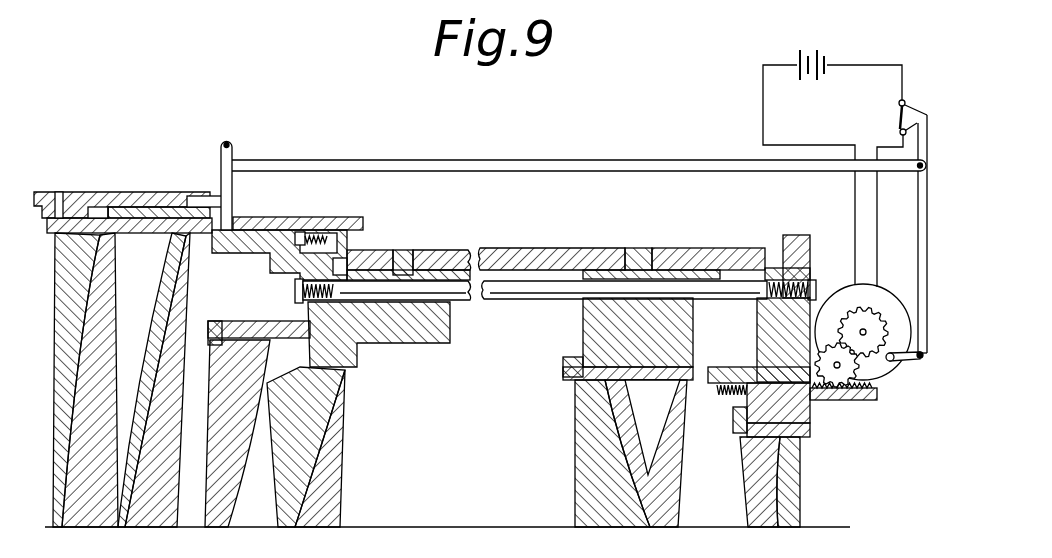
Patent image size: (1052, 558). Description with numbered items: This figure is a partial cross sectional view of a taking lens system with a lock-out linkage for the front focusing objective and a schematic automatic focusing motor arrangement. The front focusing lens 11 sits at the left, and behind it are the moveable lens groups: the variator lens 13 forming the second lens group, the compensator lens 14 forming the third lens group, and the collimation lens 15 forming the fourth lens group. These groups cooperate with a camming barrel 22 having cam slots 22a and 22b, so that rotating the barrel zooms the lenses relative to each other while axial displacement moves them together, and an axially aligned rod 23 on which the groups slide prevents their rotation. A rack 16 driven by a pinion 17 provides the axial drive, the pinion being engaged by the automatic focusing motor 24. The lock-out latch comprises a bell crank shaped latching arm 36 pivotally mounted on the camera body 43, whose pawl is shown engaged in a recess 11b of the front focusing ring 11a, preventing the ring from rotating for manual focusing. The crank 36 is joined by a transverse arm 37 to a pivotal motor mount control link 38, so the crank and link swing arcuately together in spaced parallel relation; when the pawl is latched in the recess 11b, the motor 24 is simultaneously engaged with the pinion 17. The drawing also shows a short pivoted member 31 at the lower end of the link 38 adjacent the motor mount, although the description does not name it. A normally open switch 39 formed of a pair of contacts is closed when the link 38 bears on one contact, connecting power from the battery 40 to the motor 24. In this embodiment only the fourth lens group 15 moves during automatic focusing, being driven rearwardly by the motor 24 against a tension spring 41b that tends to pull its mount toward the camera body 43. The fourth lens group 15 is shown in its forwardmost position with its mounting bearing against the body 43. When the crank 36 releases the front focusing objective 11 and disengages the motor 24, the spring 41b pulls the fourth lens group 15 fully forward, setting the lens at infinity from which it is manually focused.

The front focusing lens 11 is at (65, 356).
The front focusing ring 11a is at (80, 197).
The recess 11b is at (200, 197).
The variator lens 13 is at (340, 468).
The compensator lens 14 is at (577, 471).
The collimation lens 15 is at (800, 507).
The rack 16 is at (877, 386).
The pinion 17 is at (843, 387).
The camming barrel 22 is at (538, 248).
The cam slot 22a is at (405, 250).
The cam slot 22b is at (642, 248).
The axially aligned rod 23 is at (537, 300).
The automatic focusing motor 24 is at (885, 295).
The lever 31 is at (917, 362).
The latching arm 36 is at (232, 144).
The transverse arm 37 is at (600, 160).
The pivotal motor mount control link 38 is at (923, 252).
The normally open switch 39 is at (906, 105).
The battery 40 is at (817, 50).
The tension spring 41b is at (732, 396).
The camera body 43 is at (797, 235).